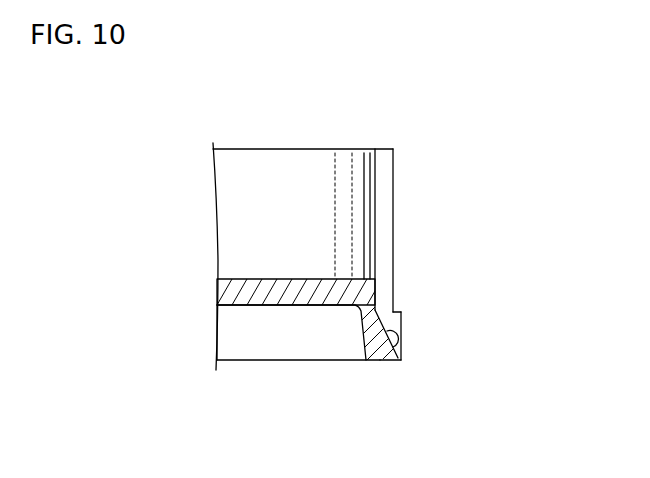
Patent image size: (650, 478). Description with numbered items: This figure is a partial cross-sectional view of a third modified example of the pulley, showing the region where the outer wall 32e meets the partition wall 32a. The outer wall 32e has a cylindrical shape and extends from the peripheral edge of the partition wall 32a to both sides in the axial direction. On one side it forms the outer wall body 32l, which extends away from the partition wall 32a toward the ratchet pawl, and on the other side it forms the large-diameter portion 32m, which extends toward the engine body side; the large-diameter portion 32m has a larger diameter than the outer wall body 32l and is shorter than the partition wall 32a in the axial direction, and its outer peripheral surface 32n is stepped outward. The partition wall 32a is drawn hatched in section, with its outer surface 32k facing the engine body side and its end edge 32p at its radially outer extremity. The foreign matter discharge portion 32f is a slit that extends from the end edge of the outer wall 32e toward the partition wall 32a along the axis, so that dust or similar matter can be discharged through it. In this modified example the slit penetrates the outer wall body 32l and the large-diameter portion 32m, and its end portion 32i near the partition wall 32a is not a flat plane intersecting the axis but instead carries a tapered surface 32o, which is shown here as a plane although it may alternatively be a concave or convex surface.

The outer wall 32e is at (318, 148).
The foreign matter discharge portion 32f is at (387, 191).
The outer wall body 32l is at (391, 232).
The partition wall 32a is at (232, 291).
The outer peripheral surface 32n is at (402, 316).
The large-diameter portion 32m is at (402, 328).
The end portion 32i is at (402, 352).
The tapered surface 32o is at (390, 353).
The outer surface 32k is at (296, 306).
The end edge 32p is at (347, 361).